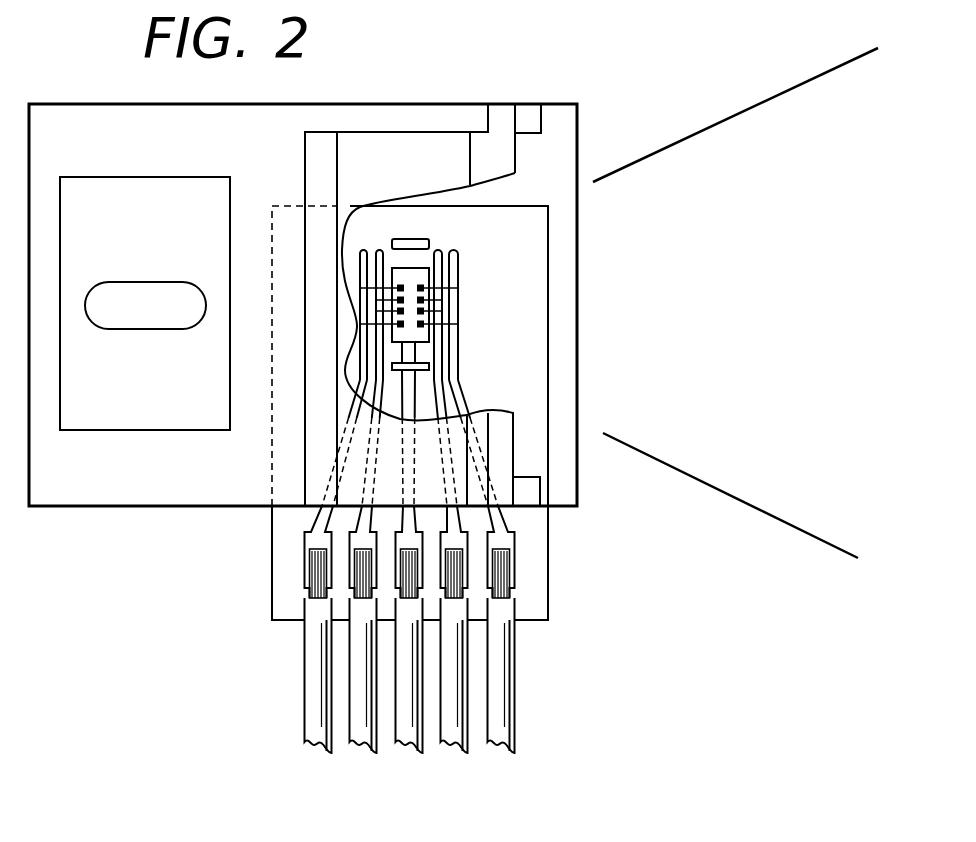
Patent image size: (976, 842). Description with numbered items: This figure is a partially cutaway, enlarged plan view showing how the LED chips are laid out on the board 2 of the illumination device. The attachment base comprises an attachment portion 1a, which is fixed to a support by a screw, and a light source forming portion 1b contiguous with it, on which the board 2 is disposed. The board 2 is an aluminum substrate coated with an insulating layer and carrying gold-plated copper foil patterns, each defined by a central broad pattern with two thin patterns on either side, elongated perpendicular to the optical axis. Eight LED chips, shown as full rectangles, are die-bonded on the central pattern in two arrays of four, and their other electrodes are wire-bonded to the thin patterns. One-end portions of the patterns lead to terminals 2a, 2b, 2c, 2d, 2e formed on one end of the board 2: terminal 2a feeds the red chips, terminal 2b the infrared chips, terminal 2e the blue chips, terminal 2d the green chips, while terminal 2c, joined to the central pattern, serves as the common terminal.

The attachment portion 1a is at (57, 506).
The light source forming portion 1b is at (577, 343).
The board 2 is at (548, 583).
The terminal 2a is at (515, 728).
The terminal 2b is at (453, 750).
The terminal 2c is at (400, 750).
The terminal 2d is at (357, 750).
The terminal 2e is at (305, 702).